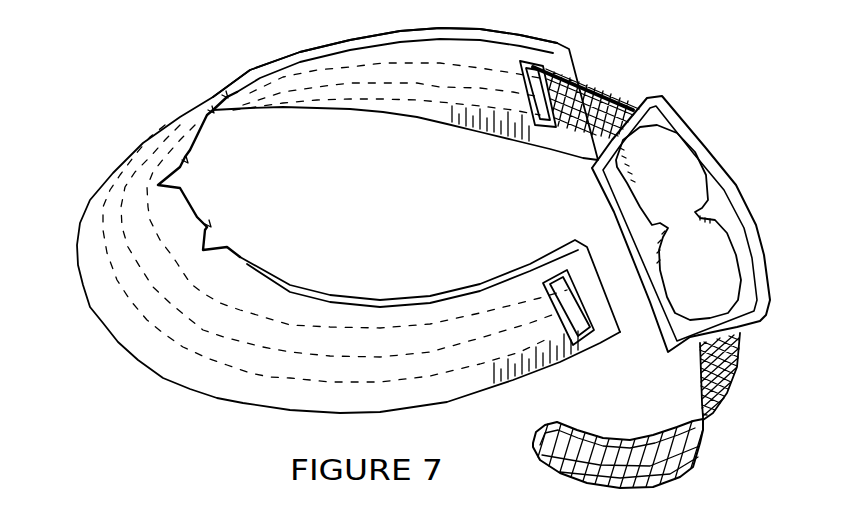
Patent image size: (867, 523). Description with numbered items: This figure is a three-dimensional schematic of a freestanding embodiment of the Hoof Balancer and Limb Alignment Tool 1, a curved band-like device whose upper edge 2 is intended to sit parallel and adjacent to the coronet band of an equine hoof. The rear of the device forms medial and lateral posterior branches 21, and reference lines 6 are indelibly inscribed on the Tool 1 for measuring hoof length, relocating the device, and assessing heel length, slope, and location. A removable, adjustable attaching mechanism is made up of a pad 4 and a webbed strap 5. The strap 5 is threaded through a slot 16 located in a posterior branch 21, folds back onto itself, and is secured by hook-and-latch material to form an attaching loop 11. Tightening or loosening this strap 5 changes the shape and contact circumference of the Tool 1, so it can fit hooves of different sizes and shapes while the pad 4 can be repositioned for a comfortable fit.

The Hoof Balancer and Limb Alignment Tool 1 is at (130, 338).
The upper edge 2 is at (246, 65).
The medial and lateral posterior branches 21 is at (502, 313).
The attaching loop 11 is at (578, 72).
The slot 16 is at (559, 294).
The reference lines 6 is at (565, 348).
The pad 4 is at (727, 175).
The strap 5 is at (706, 405).